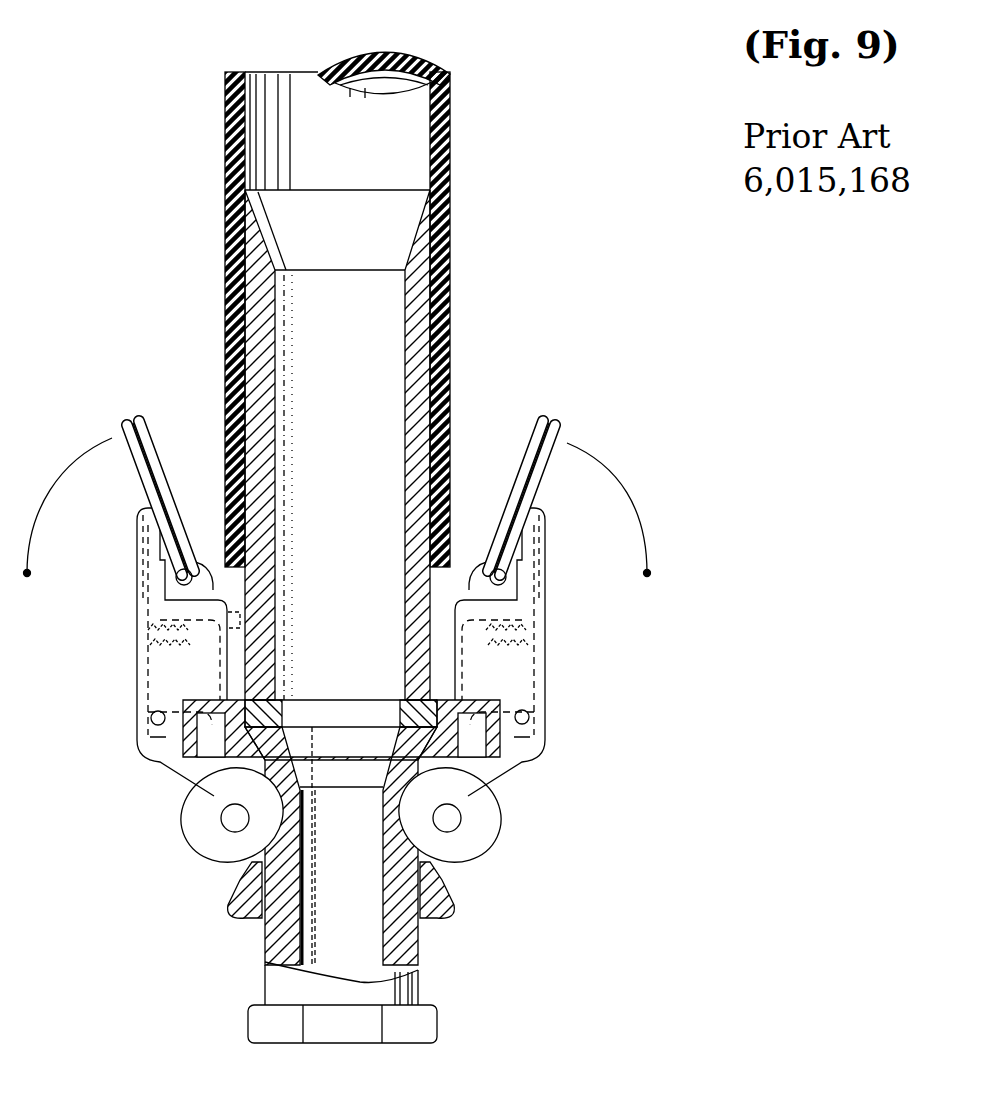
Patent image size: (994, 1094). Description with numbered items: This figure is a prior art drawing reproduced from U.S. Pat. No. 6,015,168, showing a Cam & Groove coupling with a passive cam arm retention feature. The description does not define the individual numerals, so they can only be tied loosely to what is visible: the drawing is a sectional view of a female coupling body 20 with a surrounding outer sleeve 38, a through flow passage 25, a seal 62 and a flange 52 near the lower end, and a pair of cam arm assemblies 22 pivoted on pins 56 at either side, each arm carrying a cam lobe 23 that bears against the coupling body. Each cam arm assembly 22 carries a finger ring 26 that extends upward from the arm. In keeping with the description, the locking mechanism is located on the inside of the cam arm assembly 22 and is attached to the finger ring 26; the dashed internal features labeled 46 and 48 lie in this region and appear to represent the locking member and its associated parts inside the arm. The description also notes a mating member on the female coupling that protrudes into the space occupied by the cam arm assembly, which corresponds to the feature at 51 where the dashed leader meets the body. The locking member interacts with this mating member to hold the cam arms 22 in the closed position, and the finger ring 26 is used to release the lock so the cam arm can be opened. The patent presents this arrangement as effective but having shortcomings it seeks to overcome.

The coupler body 20 is at (275, 544).
The cam arm 22 is at (135, 580).
The cam lobe 23 is at (262, 852).
The flow passage 25 is at (392, 818).
The handle 26 is at (135, 417).
The outer sleeve 38 is at (210, 565).
The spring 46 is at (137, 618).
The locking pin 48 is at (138, 533).
The groove 51 is at (232, 620).
The flange 52 is at (213, 712).
The pivot pin 56 is at (183, 752).
The seal ring 62 is at (225, 730).